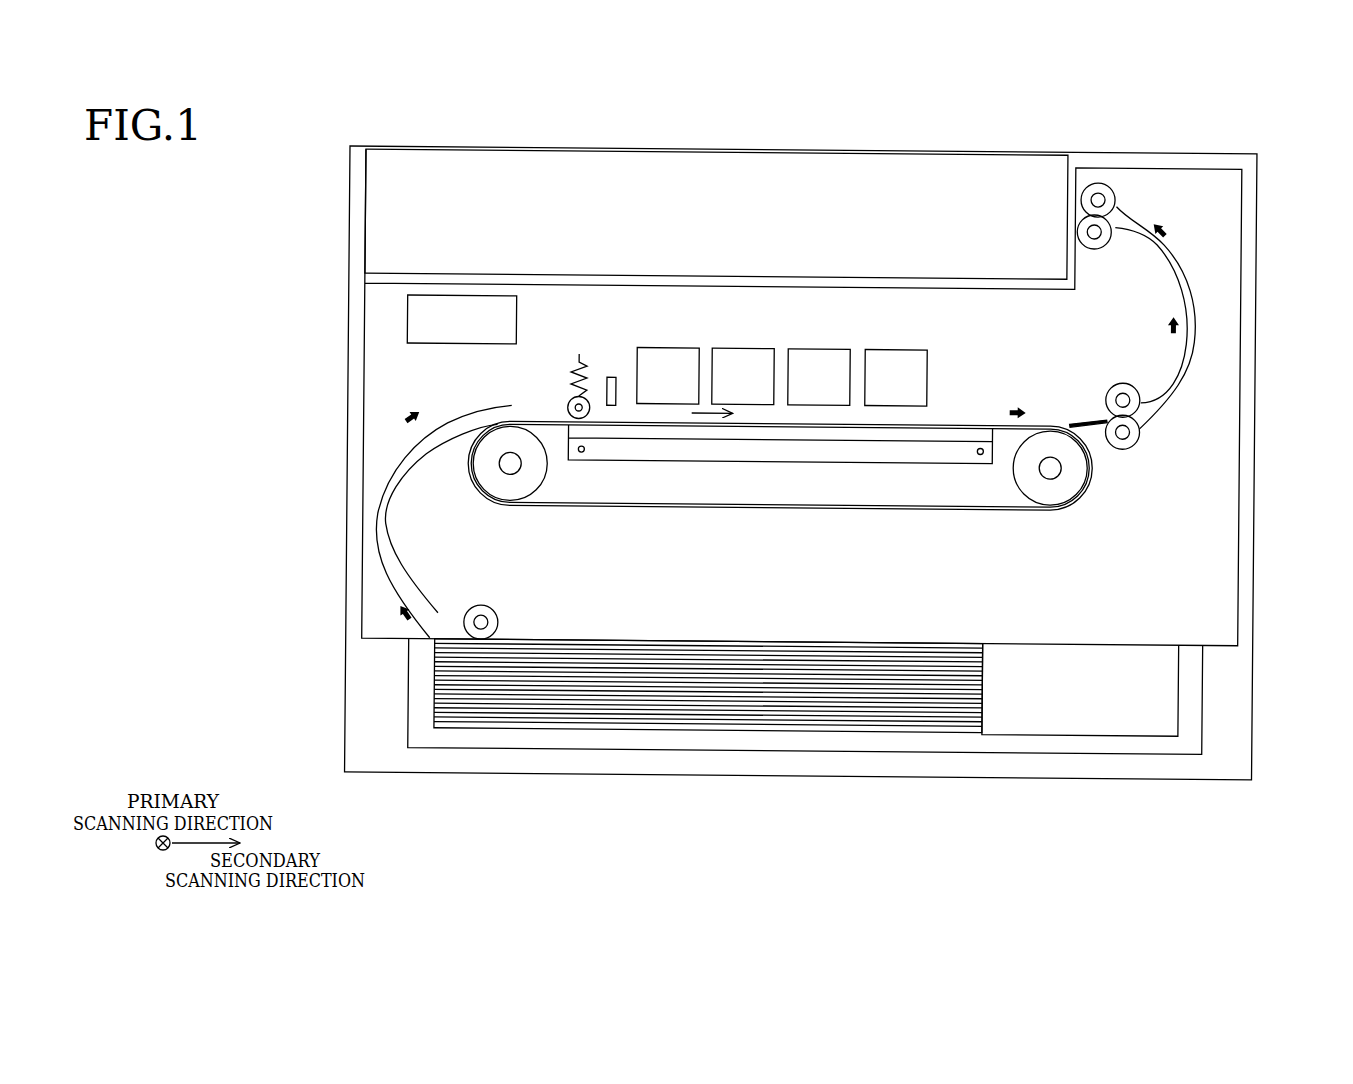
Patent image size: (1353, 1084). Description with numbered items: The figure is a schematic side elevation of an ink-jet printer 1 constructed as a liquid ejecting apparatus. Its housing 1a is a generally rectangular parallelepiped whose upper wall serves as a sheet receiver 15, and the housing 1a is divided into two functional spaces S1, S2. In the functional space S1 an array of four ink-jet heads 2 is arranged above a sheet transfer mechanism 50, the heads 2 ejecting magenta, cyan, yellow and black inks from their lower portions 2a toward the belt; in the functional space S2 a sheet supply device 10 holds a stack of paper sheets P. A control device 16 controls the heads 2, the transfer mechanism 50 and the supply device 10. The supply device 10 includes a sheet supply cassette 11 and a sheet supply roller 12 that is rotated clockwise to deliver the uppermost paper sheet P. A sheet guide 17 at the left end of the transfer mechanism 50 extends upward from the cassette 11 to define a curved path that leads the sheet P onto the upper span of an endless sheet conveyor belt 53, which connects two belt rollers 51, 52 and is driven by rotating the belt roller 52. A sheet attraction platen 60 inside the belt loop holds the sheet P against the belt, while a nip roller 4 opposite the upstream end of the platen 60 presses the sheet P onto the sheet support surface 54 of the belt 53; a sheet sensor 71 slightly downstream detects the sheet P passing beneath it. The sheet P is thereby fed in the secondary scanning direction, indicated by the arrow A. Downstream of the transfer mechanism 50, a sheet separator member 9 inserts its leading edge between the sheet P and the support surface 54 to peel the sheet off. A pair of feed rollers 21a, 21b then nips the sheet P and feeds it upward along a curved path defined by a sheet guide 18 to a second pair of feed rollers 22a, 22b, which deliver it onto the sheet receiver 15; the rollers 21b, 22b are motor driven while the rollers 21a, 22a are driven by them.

The ink-jet printer 1 is at (1292, 184).
The housing 1a is at (355, 328).
The ink-jet head 2 is at (643, 345).
The nozzle surface 2a is at (668, 402).
The nip roller 4 is at (573, 400).
The sheet separator member 9 is at (1090, 415).
The sheet supply device 10 is at (386, 754).
The sheet supply cassette 11 is at (486, 749).
The sheet supply roller 12 is at (491, 607).
The sheet receiver 15 is at (826, 271).
The control device 16 is at (508, 294).
The sheet guide 17 is at (374, 488).
The sheet guide 18 is at (1210, 300).
The feed roller 21a is at (1137, 437).
The feed roller 21b is at (1125, 376).
The feed roller 22a is at (1097, 243).
The feed roller 22b is at (1111, 197).
The sheet transfer mechanism 50 is at (631, 527).
The belt roller 51 is at (499, 488).
The belt roller 52 is at (1045, 499).
The endless sheet conveyor belt 53 is at (673, 505).
The sheet support surface 54 is at (779, 425).
The sheet attraction platen 60 is at (850, 484).
The sheet sensor 71 is at (610, 375).
The conveying direction A is at (707, 412).
The paper sheet P is at (742, 638).
The functional space S1 is at (1005, 338).
The functional space S2 is at (1226, 629).